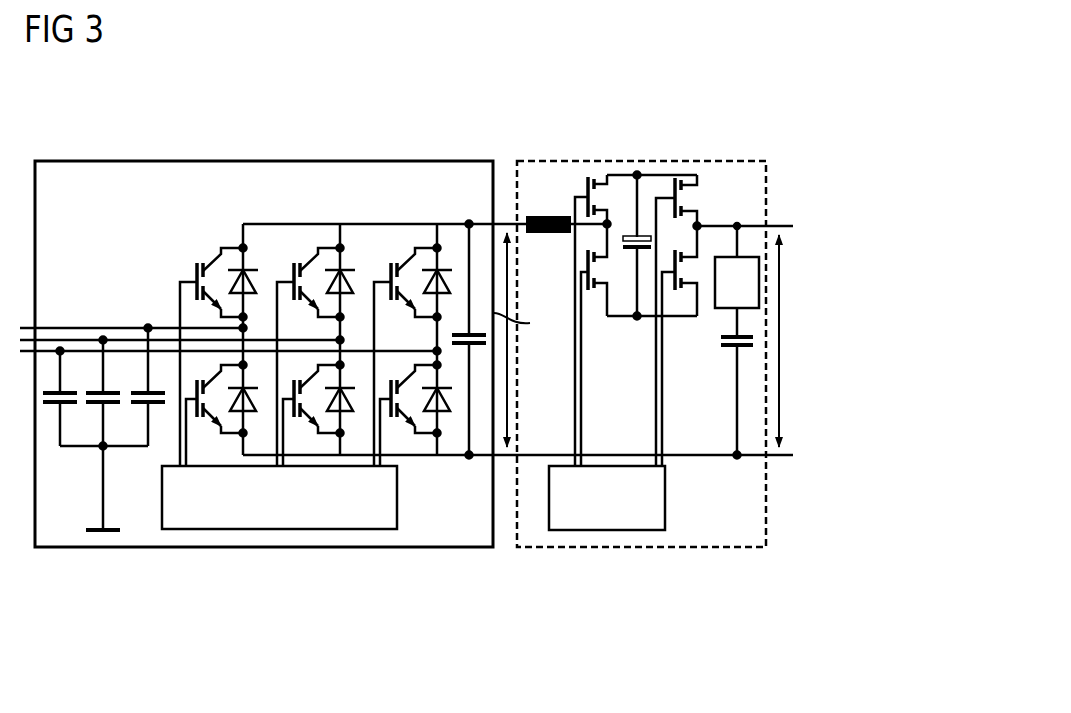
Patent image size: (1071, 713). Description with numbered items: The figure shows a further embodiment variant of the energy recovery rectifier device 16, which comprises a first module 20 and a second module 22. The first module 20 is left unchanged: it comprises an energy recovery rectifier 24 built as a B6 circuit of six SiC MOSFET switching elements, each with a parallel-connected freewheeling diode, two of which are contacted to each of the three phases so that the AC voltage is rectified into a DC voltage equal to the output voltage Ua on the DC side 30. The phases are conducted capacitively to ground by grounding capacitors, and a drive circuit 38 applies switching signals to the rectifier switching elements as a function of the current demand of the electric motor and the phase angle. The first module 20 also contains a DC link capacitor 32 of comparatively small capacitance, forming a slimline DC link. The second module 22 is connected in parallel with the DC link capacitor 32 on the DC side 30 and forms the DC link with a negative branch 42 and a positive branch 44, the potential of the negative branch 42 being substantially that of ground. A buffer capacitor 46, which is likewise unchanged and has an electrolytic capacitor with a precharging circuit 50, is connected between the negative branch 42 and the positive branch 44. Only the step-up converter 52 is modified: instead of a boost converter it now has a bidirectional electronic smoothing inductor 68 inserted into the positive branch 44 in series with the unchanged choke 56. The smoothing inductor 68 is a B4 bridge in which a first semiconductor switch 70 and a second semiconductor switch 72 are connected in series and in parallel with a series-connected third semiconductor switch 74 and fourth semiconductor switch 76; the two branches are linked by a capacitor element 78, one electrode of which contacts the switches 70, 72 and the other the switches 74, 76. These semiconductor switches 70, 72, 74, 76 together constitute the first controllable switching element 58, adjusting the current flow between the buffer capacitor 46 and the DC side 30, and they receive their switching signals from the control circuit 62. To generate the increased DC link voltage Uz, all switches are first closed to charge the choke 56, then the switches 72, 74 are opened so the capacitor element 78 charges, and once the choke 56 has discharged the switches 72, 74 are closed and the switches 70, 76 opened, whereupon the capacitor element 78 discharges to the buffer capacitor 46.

The energy recovery rectifier device 16 is at (72, 143).
The first module 20 is at (153, 549).
The second module 22 is at (712, 550).
The energy recovery rectifier 24 is at (266, 216).
The DC side 30 is at (449, 215).
The DC link capacitor 32 is at (485, 460).
The drive circuit 38 is at (276, 531).
The negative branch 42 is at (722, 460).
The positive branch 44 is at (486, 214).
The buffer capacitor 46 is at (727, 400).
The precharging circuit 50 is at (750, 256).
The step-up converter 52 is at (640, 333).
The choke 56 is at (549, 216).
The first controllable switching element 58 is at (692, 131).
The control circuit 62 is at (602, 533).
The bidirectional electronic smoothing inductor 68 is at (657, 148).
The first semiconductor switch 70 is at (582, 181).
The second semiconductor switch 72 is at (710, 178).
The third semiconductor switch 74 is at (592, 302).
The fourth semiconductor switch 76 is at (707, 245).
The capacitor element 78 is at (627, 226).